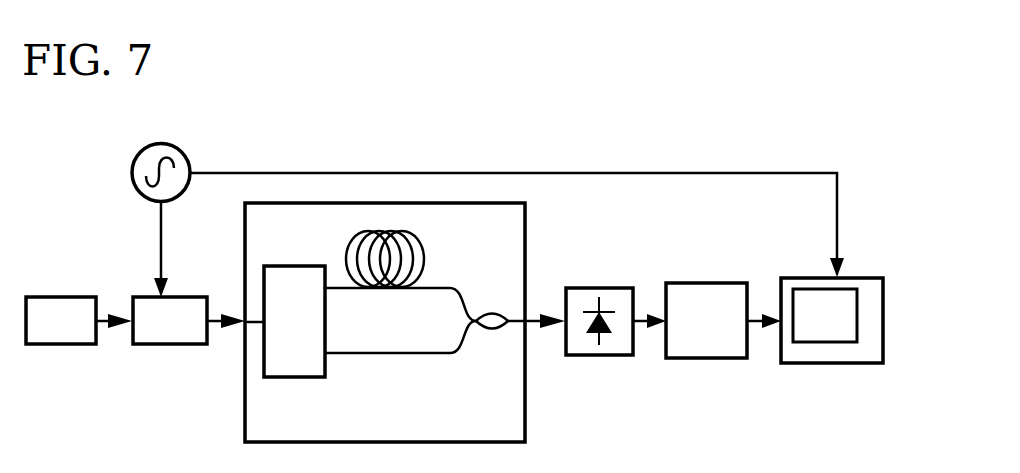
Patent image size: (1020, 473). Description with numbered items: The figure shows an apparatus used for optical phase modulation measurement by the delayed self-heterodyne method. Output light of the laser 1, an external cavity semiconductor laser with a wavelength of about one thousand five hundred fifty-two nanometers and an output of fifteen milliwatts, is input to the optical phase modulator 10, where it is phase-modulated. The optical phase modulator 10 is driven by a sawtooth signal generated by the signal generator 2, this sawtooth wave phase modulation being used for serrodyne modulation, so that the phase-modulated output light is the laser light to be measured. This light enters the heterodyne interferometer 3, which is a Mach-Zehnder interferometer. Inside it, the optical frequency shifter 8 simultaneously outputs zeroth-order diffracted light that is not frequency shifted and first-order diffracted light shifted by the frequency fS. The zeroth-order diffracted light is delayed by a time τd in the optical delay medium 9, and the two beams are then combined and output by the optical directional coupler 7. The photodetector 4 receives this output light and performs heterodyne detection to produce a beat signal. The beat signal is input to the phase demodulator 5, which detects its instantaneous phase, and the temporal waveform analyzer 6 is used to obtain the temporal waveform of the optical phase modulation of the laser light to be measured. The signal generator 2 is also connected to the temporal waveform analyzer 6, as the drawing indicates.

The laser 1 is at (36, 346).
The optical phase modulator 10 is at (146, 346).
The signal generator 2 is at (181, 198).
The heterodyne interferometer 3 is at (525, 252).
The optical frequency shifter 8 is at (295, 378).
The optical delay medium 9 is at (424, 260).
The optical directional coupler 7 is at (488, 334).
The photodetector 4 is at (600, 356).
The phase demodulator 5 is at (713, 359).
The temporal waveform analyzer 6 is at (828, 364).